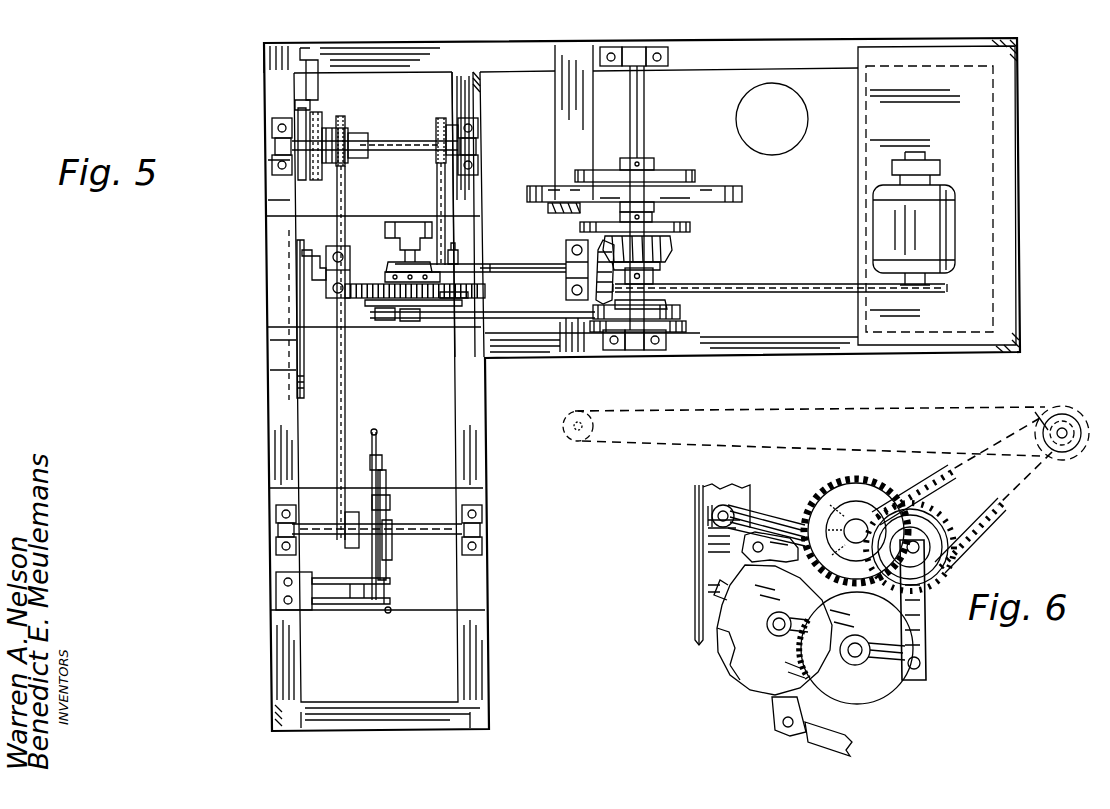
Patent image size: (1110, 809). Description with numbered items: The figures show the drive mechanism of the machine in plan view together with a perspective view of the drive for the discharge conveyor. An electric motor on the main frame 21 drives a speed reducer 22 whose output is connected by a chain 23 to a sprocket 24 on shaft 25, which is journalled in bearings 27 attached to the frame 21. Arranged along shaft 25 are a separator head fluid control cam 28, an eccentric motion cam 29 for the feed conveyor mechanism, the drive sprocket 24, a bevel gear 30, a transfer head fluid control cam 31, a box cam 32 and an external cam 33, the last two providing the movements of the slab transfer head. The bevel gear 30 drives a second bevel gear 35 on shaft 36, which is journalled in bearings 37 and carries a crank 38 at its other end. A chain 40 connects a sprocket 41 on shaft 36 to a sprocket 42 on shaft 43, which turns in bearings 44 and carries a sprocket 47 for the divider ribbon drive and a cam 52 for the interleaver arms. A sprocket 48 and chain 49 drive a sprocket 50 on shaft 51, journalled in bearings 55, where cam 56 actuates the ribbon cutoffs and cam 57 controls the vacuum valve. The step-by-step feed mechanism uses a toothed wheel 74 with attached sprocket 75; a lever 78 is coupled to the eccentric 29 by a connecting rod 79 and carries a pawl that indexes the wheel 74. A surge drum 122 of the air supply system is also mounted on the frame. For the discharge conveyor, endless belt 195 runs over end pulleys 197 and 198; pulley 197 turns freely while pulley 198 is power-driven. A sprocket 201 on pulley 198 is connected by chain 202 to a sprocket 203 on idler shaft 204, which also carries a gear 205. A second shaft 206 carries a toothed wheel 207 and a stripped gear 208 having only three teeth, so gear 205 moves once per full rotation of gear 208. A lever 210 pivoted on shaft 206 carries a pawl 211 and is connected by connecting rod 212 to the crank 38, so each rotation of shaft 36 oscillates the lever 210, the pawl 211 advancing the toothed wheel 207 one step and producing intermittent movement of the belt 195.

In FIG. 5, the main frame 21 is at (270, 676).
In FIG. 6, the main frame 21 is at (700, 545).
In FIG. 5, the speed reducer 22 is at (940, 185).
In FIG. 5, the chain 23 is at (758, 288).
In FIG. 5, the sprocket 24 is at (652, 278).
In FIG. 5, the shaft 25 is at (635, 135).
In FIG. 5, the bearings 27 is at (650, 55).
In FIG. 5, the separator head fluid control cam 28 is at (690, 328).
In FIG. 5, the eccentric motion cam 29 is at (675, 315).
In FIG. 5, the bevel gear 30 is at (670, 250).
In FIG. 5, the transfer head fluid control cam 31 is at (690, 226).
In FIG. 5, the box cam 32 is at (720, 188).
In FIG. 5, the external cam 33 is at (658, 172).
In FIG. 5, the second bevel gear 35 is at (590, 250).
In FIG. 5, the shaft 36 is at (506, 268).
In FIG. 5, the bearings 37 is at (575, 285).
In FIG. 5, the crank 38 is at (320, 265).
In FIG. 5, the chain 40 is at (446, 190).
In FIG. 5, the sprocket 41 is at (450, 262).
In FIG. 5, the sprocket 42 is at (450, 118).
In FIG. 5, the shaft 43 is at (378, 145).
In FIG. 5, the bearings 44 is at (276, 140).
In FIG. 5, the sprocket 47 is at (290, 118).
In FIG. 5, the sprocket 48 is at (342, 118).
In FIG. 5, the chain 49 is at (350, 395).
In FIG. 5, the sprocket 50 is at (352, 500).
In FIG. 5, the shaft 51 is at (407, 527).
In FIG. 5, the cam 52 is at (316, 175).
In FIG. 5, the bearings 55 is at (278, 533).
In FIG. 5, the cam 56 is at (352, 598).
In FIG. 5, the cam 57 is at (385, 555).
In FIG. 5, the toothed wheel 74 is at (360, 300).
In FIG. 5, the sprocket 75 is at (400, 262).
In FIG. 5, the lever 78 is at (440, 305).
In FIG. 5, the connecting rod 79 is at (455, 318).
In FIG. 5, the surge drum 122 is at (782, 100).
In FIG. 6, the endless belt 195 is at (760, 408).
In FIG. 6, the end pulley 197 is at (595, 426).
In FIG. 6, the end pulley 198 is at (1065, 428).
In FIG. 6, the sprocket 201 is at (1065, 452).
In FIG. 6, the chain 202 is at (990, 512).
In FIG. 6, the sprocket 203 is at (950, 545).
In FIG. 6, the idler shaft 204 is at (772, 513).
In FIG. 6, the gear 205 is at (850, 482).
In FIG. 6, the second shaft 206 is at (900, 660).
In FIG. 6, the toothed wheel 207 is at (730, 655).
In FIG. 6, the stripped gear 208 is at (850, 685).
In FIG. 6, the lever 210 is at (768, 707).
In FIG. 6, the pawl 211 is at (738, 562).
In FIG. 5, the connecting rod 212 is at (298, 342).
In FIG. 6, the connecting rod 212 is at (848, 746).